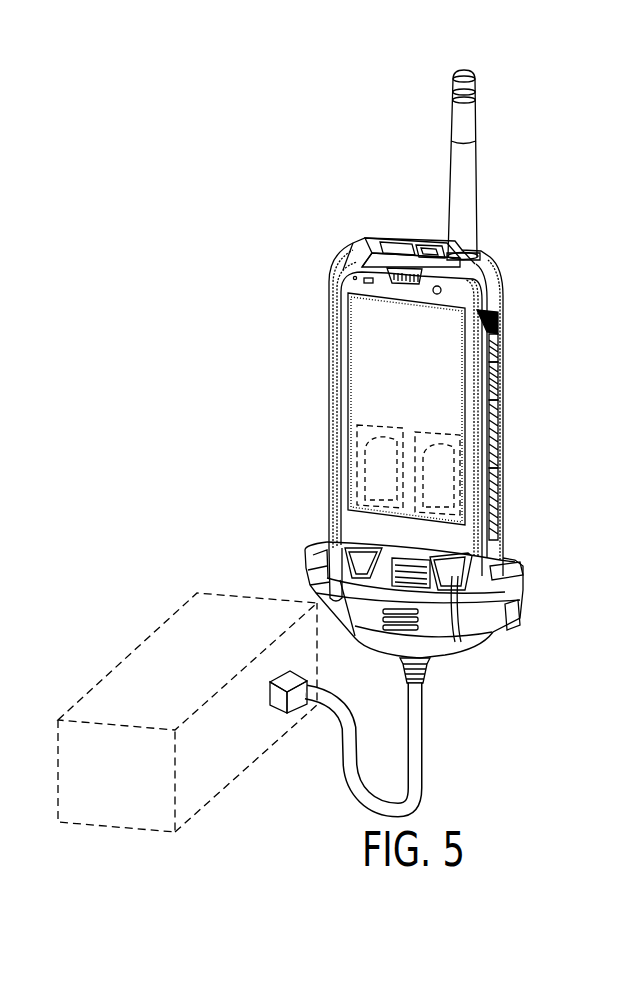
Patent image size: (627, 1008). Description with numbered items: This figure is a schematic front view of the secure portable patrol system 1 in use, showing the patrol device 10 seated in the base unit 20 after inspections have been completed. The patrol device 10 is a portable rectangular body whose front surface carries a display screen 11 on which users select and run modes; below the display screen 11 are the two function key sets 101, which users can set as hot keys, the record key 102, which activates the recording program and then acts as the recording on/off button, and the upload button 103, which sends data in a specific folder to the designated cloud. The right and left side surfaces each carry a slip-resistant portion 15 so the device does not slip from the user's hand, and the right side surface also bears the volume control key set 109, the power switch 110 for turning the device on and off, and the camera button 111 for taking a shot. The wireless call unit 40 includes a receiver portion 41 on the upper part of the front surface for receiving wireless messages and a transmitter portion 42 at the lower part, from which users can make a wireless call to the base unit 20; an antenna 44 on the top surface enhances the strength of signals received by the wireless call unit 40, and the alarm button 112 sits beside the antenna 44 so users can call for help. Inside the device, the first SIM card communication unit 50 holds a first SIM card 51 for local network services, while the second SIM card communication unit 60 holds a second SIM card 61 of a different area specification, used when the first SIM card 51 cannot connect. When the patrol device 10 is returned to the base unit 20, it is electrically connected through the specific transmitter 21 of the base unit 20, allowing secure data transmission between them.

The secure portable patrol system 1 is at (293, 277).
The patrol device 10 is at (338, 242).
The display screen 11 is at (457, 355).
The slip-resistant portion 15 is at (503, 450).
The base unit 20 is at (270, 760).
The specific transmitter 21 is at (532, 563).
The wireless call unit 40 is at (395, 217).
The receiver portion 41 is at (368, 246).
The transmitter portion 42 is at (477, 641).
The antenna 44 is at (465, 172).
The first SIM card communication unit 50 is at (357, 437).
The first SIM card 51 is at (362, 474).
The second SIM card communication unit 60 is at (503, 462).
The second SIM card 61 is at (505, 490).
The function key set 101 is at (316, 547).
The record key 102 is at (312, 573).
The upload button 103 is at (513, 602).
The volume control key set 109 is at (500, 350).
The power switch 110 is at (497, 402).
The camera button 111 is at (500, 530).
The alarm button 112 is at (427, 247).